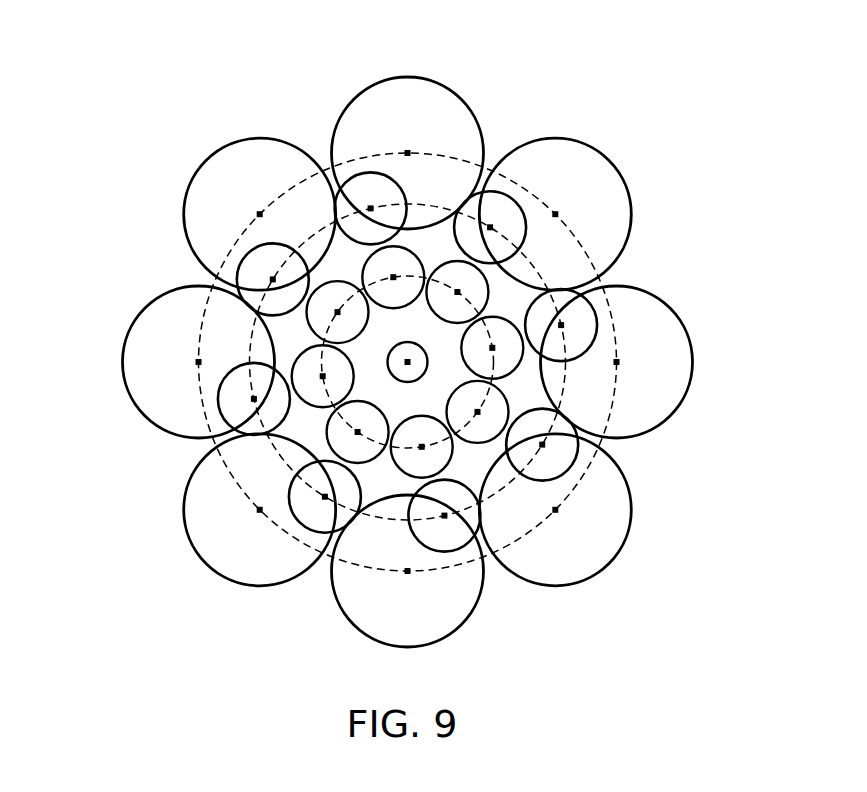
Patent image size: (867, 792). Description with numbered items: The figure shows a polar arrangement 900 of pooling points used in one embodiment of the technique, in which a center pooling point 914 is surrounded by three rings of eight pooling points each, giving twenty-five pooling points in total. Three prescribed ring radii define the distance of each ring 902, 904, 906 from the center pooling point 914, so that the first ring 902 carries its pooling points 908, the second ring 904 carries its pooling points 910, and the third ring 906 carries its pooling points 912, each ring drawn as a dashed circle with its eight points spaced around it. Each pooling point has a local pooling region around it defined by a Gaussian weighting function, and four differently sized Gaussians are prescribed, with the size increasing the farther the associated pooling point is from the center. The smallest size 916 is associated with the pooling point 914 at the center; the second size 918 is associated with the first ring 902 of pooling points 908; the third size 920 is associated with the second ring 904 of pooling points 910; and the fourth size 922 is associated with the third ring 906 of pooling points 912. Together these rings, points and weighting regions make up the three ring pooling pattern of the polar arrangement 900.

The polar arrangement 900 is at (134, 194).
The first ring 902 is at (384, 447).
The second ring 904 is at (533, 265).
The third ring 906 is at (357, 157).
The pooling points of the first ring 908 is at (337, 313).
The pooling points of the second ring 910 is at (562, 326).
The pooling points of the third ring 912 is at (407, 573).
The center pooling point 914 is at (408, 360).
The smallest Gaussian weighting function size 916 is at (408, 382).
The second Gaussian weighting function size 918 is at (330, 408).
The third Gaussian weighting function size 920 is at (574, 470).
The fourth Gaussian weighting function size 922 is at (407, 77).